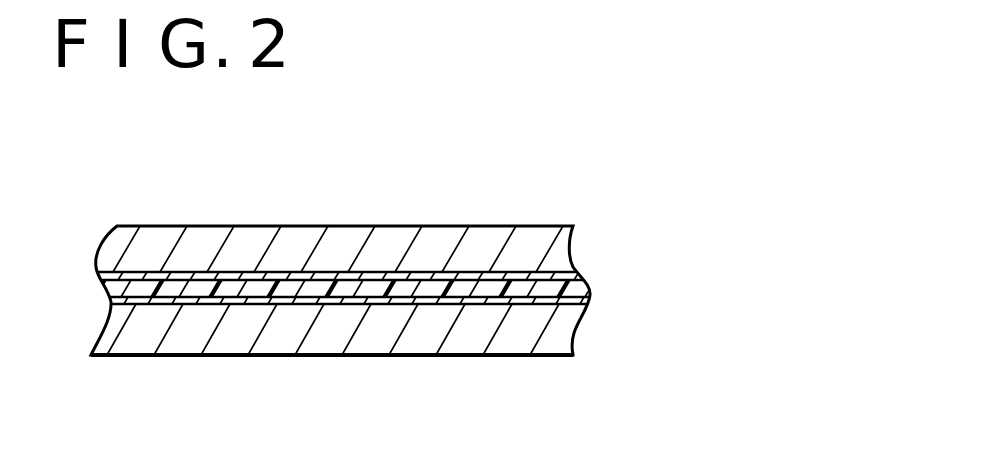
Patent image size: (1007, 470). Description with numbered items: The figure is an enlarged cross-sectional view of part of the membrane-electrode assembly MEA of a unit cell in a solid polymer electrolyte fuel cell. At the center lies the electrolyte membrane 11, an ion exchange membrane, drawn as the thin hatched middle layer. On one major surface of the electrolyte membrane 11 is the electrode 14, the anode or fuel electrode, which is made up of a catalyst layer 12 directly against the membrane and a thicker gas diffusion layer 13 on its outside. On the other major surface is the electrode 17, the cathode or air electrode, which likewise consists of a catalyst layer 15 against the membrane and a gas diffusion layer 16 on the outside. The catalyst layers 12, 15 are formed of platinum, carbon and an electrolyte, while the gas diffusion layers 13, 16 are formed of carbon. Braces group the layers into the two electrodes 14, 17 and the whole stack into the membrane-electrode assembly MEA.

The electrolyte membrane 11 is at (575, 291).
The catalyst layer 12 is at (573, 308).
The gas diffusion layer 13 is at (557, 337).
The electrode 14 is at (426, 360).
The catalyst layer 15 is at (577, 280).
The gas diffusion layer 16 is at (557, 250).
The electrode 17 is at (429, 229).
The membrane-electrode assembly MEA is at (481, 300).